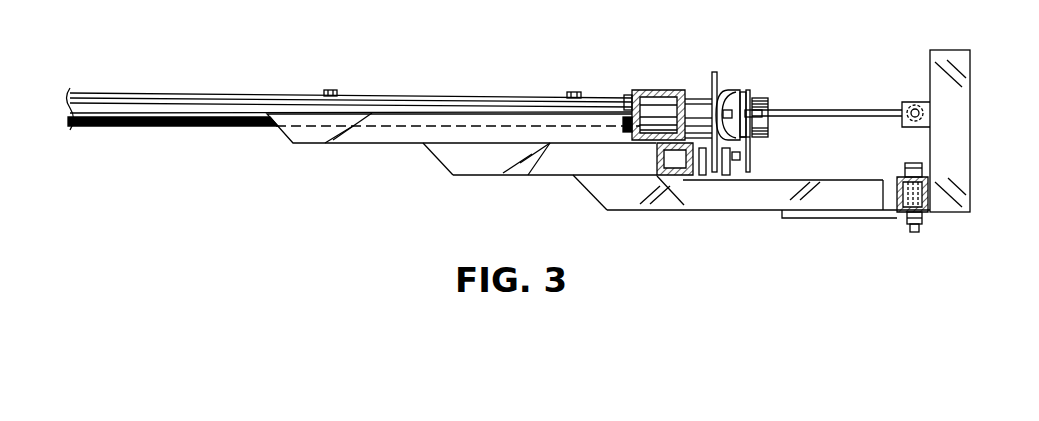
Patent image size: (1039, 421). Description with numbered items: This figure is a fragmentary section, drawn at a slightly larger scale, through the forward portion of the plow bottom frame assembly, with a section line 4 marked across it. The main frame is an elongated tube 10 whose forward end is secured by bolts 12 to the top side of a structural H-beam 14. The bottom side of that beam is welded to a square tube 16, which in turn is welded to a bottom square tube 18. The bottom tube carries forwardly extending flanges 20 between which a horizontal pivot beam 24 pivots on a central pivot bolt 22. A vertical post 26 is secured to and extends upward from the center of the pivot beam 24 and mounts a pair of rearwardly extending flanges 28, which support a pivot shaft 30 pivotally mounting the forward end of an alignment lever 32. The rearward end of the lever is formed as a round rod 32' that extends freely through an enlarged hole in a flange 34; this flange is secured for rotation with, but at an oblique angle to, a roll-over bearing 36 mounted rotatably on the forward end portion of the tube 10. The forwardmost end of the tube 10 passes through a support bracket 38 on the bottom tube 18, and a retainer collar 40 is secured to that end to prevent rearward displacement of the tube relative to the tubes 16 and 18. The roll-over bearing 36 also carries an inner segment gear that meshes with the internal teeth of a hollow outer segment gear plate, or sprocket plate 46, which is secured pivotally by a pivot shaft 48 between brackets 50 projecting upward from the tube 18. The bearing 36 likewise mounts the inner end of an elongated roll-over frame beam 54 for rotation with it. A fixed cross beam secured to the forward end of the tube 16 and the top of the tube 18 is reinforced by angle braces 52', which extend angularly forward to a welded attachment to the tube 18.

The section line 4- 4 is at (619, 93).
The elongated tube 10 is at (144, 100).
The bolts 12 is at (331, 89).
The structural H-beam 14 is at (363, 135).
The square tube 16 is at (483, 162).
The bottom square tube 18 is at (598, 201).
The forwardly extending flanges 20 is at (838, 177).
The central pivot bolt 22 is at (915, 234).
The horizontal pivot beam 24 is at (932, 198).
The vertical post 26 is at (962, 161).
The rearwardly extending flanges 28 is at (957, 116).
The pivot shaft 30 is at (908, 106).
The alignment lever 32 is at (827, 100).
The round rod 32' is at (771, 95).
The flange 34 is at (736, 95).
The roll-over bearing 36 is at (700, 97).
The support bracket 38 is at (757, 157).
The retainer collar 40 is at (748, 147).
The outer segment gear plate 46 is at (715, 72).
The pivot shaft 48 is at (740, 155).
The brackets 50 is at (728, 177).
The angle braces 52' is at (866, 226).
The roll-over frame beam 54 is at (652, 92).